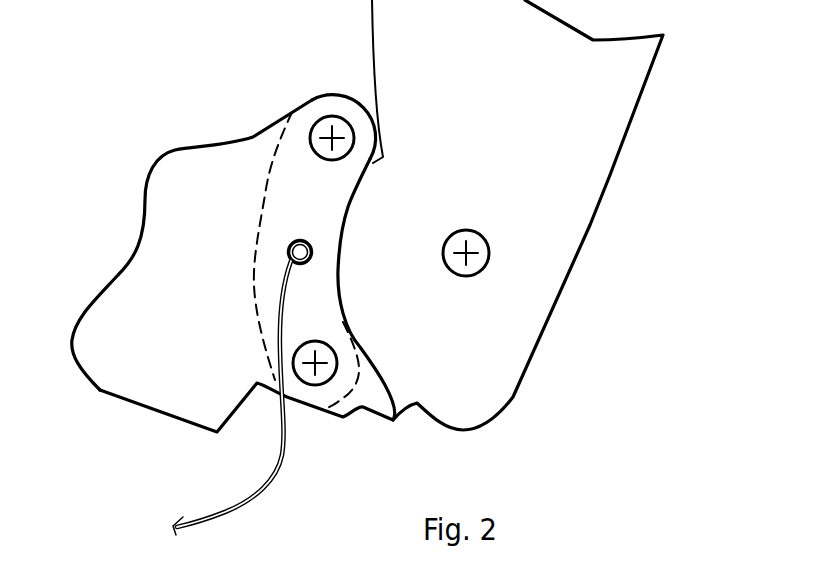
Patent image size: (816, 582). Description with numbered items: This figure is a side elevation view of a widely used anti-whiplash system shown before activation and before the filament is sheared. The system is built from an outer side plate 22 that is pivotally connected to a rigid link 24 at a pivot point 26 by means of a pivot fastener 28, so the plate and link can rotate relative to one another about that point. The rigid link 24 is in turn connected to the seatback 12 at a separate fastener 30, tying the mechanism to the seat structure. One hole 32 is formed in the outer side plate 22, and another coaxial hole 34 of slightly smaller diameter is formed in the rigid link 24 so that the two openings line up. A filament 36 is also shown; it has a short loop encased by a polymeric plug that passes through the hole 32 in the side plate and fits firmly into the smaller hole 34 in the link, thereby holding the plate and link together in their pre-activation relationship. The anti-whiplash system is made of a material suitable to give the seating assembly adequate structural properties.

The seatback 12 is at (560, 147).
The outer side plate 22 is at (112, 374).
The rigid link 24 is at (274, 163).
The pivot point 26 is at (336, 136).
The pivot fastener 28 is at (322, 123).
The fastener 30 is at (328, 372).
The hole 32 is at (291, 249).
The coaxial hole 34 is at (311, 251).
The filament 36 is at (283, 468).